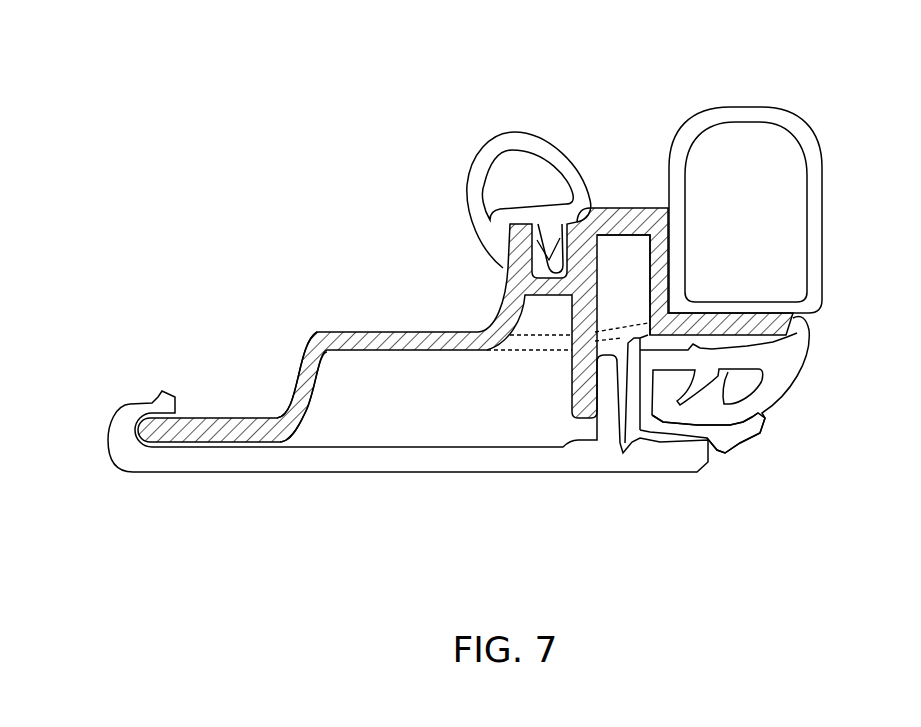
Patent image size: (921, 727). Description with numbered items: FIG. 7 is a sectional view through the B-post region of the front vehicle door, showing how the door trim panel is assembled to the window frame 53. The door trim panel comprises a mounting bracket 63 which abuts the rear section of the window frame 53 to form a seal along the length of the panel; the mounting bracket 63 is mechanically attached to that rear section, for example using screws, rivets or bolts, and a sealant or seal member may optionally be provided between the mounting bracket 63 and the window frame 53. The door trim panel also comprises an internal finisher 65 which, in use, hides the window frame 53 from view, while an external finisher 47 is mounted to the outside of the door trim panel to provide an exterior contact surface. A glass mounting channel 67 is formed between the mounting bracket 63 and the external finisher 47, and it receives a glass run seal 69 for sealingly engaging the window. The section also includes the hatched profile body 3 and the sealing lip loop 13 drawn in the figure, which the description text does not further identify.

The profile body 3 is at (493, 277).
The sealing lip loop 13 is at (542, 129).
The external finisher 47 is at (475, 472).
The window frame 53 is at (795, 130).
The mounting bracket 63 is at (652, 264).
The internal finisher 65 is at (303, 375).
The glass mounting channel 67 is at (727, 465).
The glass run seal 69 is at (733, 437).